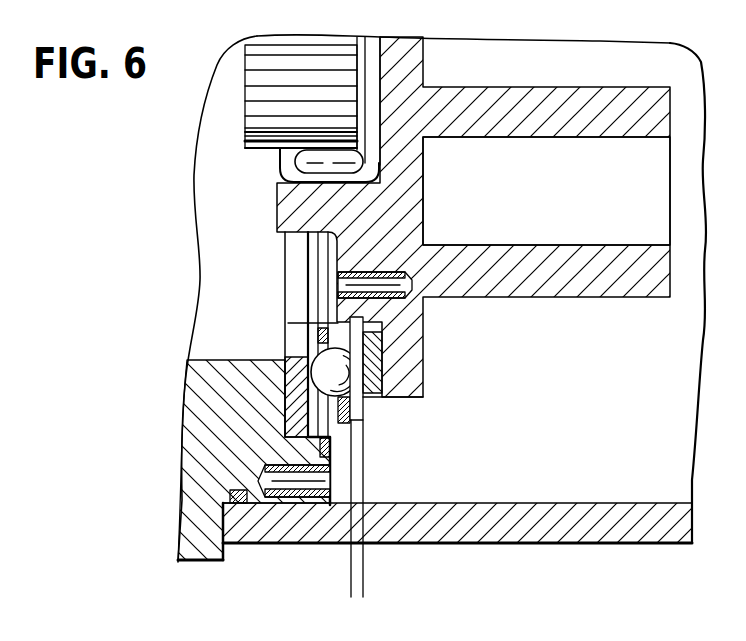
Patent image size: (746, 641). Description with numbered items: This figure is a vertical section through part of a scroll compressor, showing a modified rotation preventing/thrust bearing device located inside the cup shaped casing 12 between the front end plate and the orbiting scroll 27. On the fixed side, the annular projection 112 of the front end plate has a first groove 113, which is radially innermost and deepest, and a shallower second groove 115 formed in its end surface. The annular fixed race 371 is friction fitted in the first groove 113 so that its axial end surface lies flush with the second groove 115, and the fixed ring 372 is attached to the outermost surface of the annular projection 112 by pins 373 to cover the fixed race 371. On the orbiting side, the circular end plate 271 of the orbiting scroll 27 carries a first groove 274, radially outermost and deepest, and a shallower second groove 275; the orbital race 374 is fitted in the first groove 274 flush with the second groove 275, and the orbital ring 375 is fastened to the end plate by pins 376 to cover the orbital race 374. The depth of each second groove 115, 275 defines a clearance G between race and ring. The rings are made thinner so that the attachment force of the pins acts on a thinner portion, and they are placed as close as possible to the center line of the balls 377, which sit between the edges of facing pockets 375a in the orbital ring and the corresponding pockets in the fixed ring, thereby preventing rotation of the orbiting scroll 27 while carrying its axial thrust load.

The orbiting scroll 27 is at (436, 191).
The circular end plate 271 is at (400, 238).
The pins 376 is at (400, 303).
The second groove 275 is at (357, 339).
The first groove 274 is at (380, 367).
The orbital race 374 is at (373, 395).
The orbital ring 375 is at (352, 424).
The pockets 375a is at (308, 324).
The fixed ring 372 is at (333, 457).
The pins 373 is at (304, 497).
The cup shaped casing 12 is at (470, 530).
The annular projection 112 is at (228, 496).
The second groove 115 is at (316, 447).
The first groove 113 is at (293, 425).
The fixed race 371 is at (287, 386).
The balls 377 is at (316, 358).
The clearance G is at (322, 305).